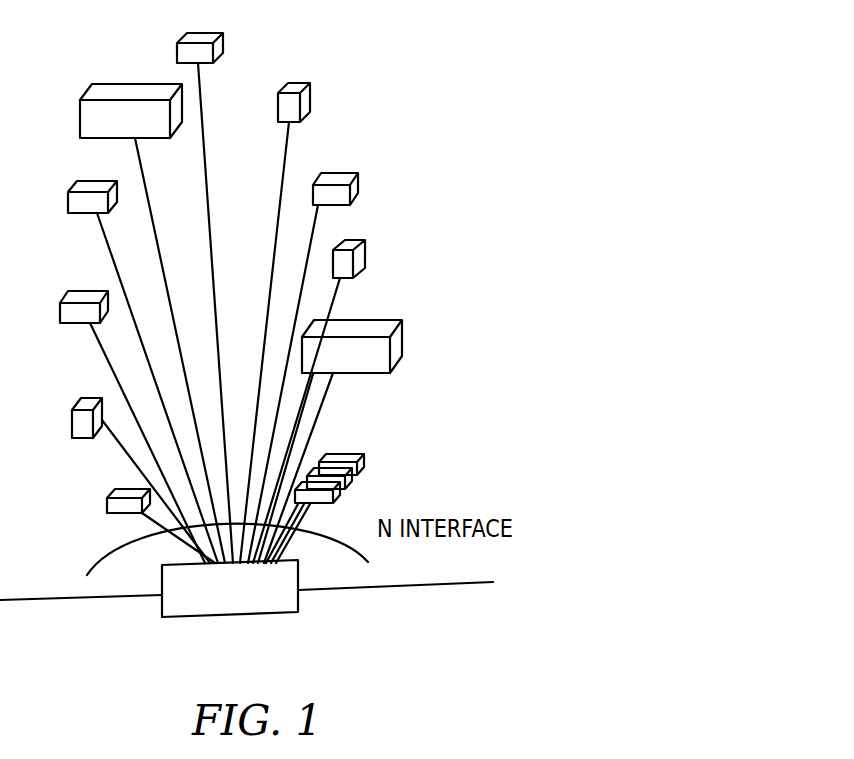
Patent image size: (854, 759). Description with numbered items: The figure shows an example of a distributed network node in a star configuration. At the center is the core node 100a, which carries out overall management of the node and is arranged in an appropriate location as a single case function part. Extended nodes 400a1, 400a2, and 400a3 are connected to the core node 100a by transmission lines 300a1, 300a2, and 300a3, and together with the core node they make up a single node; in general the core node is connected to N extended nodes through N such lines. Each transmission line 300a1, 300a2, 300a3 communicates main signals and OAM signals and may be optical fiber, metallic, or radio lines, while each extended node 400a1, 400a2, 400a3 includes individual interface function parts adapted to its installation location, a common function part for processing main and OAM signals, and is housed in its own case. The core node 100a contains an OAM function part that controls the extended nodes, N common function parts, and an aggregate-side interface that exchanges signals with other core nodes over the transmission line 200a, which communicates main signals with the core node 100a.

The core node 100a is at (185, 618).
The transmission line 200a is at (367, 590).
The transmission line 300a1 is at (315, 424).
The transmission line 300a2 is at (358, 288).
The transmission line 300a3 is at (322, 222).
The extended node 400a1 is at (402, 336).
The extended node 400a2 is at (363, 253).
The extended node 400a3 is at (338, 174).